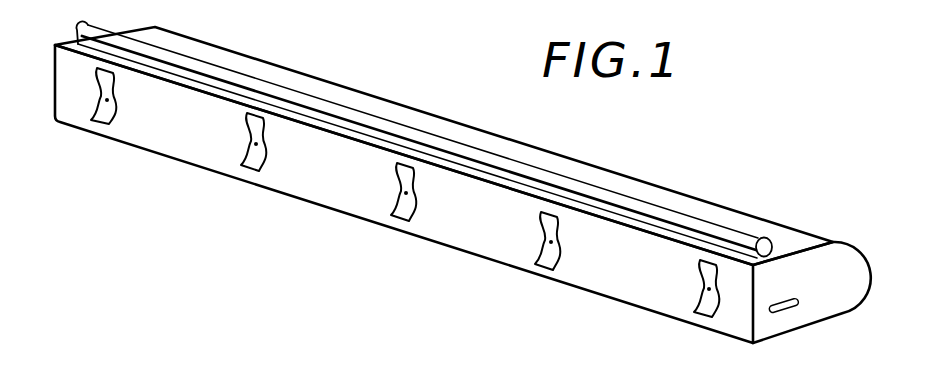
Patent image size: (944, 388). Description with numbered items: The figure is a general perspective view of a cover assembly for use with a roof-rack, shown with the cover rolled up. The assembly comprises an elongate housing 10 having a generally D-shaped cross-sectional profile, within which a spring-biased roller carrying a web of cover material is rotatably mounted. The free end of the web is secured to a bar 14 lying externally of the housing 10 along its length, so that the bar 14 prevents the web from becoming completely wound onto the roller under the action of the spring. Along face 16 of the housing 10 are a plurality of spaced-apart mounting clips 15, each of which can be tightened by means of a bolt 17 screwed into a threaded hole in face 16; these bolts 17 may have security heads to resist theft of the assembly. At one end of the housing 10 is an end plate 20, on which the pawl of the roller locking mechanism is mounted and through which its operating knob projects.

The housing 10 is at (667, 179).
The bar 14 is at (743, 237).
The mounting clips 15 is at (240, 162).
The face 16 is at (460, 223).
The bolt 17 is at (112, 96).
The end plate 20 is at (833, 288).